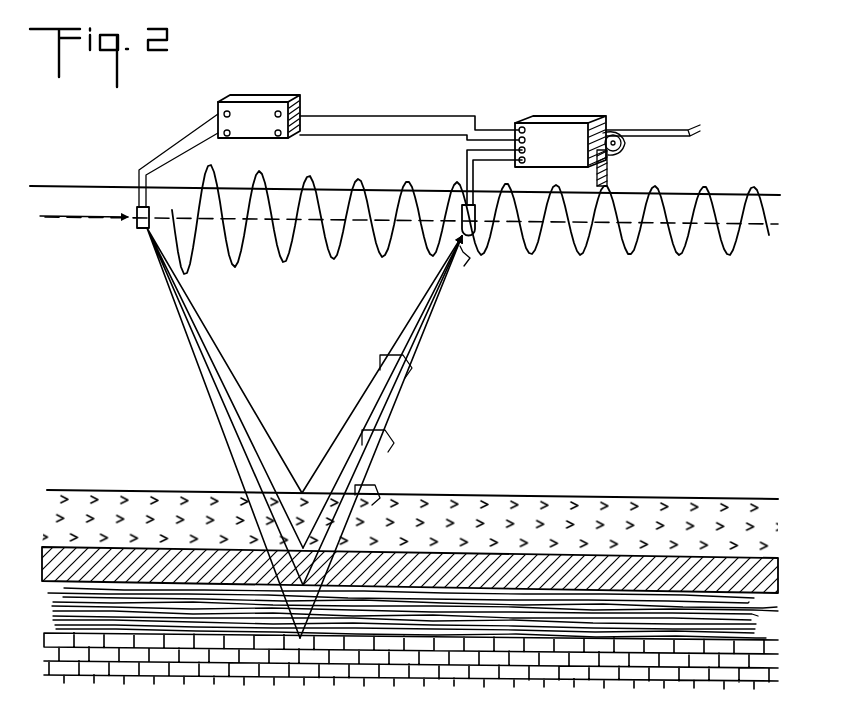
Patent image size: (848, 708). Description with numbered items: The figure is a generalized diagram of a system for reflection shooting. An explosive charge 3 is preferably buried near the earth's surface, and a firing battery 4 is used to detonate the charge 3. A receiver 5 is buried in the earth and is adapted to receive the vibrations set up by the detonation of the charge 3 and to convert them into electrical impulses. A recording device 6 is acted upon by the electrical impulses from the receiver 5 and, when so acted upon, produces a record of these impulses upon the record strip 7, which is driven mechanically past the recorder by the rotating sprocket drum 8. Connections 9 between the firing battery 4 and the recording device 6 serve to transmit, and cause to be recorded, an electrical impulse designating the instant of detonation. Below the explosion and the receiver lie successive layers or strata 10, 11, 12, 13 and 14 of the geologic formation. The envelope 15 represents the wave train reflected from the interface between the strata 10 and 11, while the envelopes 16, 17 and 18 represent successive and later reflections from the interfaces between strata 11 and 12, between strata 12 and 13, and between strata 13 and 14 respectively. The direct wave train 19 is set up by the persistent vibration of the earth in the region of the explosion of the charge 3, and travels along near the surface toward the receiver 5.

The explosive charge 3 is at (137, 204).
The firing battery 4 is at (272, 100).
The receiver 5 is at (466, 204).
The recording device 6 is at (568, 119).
The record strip 7 is at (690, 131).
The rotating sprocket drum 8 is at (630, 144).
The connections 9 is at (385, 135).
The stratum 10 is at (96, 356).
The stratum 11 is at (90, 512).
The stratum 12 is at (48, 556).
The stratum 13 is at (56, 600).
The stratum 14 is at (56, 655).
The envelope 15 is at (466, 264).
The envelope 16 is at (405, 378).
The envelope 17 is at (388, 452).
The envelope 18 is at (380, 495).
The direct wave train 19 is at (562, 248).